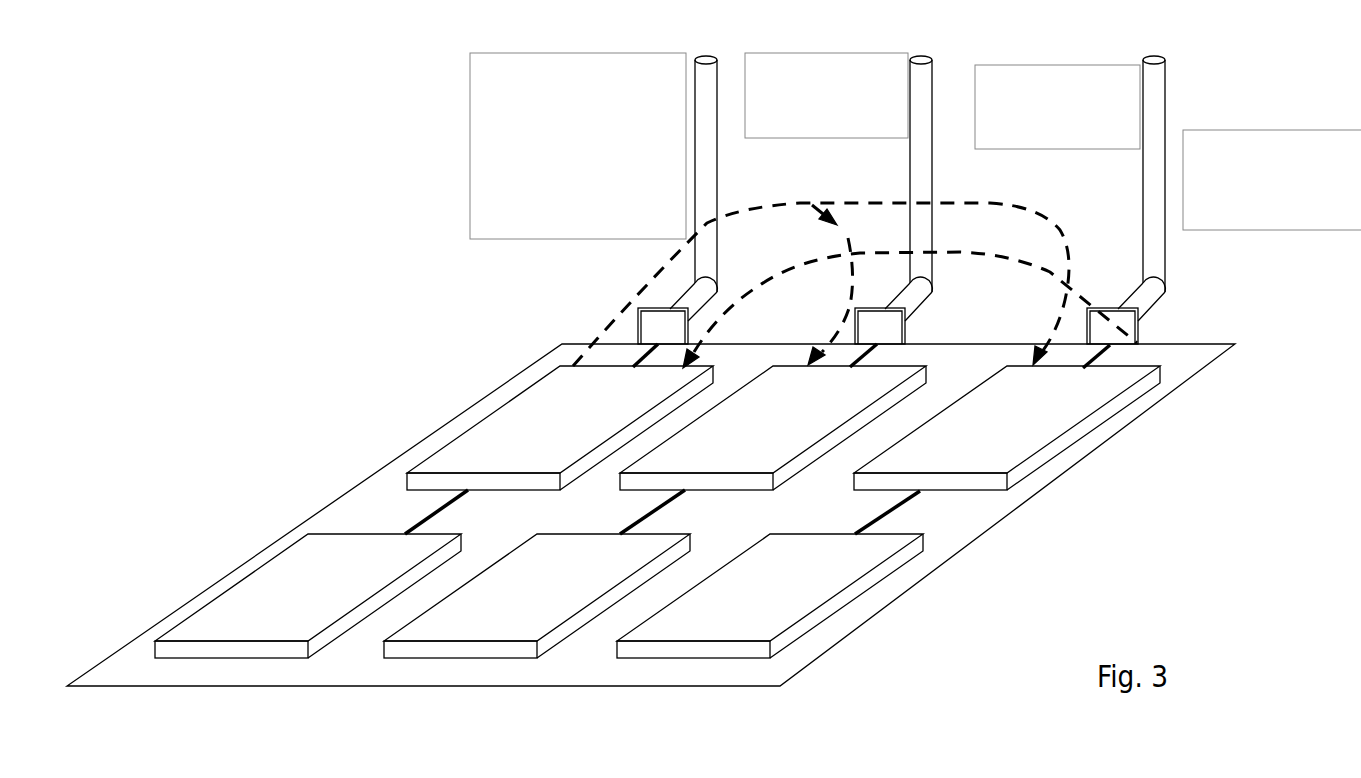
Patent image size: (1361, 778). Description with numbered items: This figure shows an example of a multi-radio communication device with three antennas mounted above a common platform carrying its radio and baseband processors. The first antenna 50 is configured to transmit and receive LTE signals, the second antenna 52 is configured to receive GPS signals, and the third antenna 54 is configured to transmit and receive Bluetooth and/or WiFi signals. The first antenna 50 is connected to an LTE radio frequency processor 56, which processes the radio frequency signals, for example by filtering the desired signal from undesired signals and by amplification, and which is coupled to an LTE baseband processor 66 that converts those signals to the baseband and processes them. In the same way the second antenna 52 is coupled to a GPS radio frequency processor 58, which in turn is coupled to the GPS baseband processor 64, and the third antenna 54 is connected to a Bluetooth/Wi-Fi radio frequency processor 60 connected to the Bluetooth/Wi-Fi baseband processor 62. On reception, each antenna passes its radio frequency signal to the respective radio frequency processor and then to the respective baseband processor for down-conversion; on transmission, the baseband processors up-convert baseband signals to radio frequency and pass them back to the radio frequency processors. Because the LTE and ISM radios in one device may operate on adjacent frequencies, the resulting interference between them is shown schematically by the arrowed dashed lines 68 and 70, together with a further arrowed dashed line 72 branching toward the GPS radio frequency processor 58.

The first antenna 50 is at (722, 76).
The second antenna 52 is at (935, 93).
The third antenna 54 is at (1168, 93).
The LTE radio frequency processor 56 is at (498, 472).
The GPS radio frequency processor 58 is at (710, 472).
The Bluetooth/Wi-Fi radio frequency processor 60 is at (934, 470).
The Bluetooth/Wi-Fi baseband processor 62 is at (867, 579).
The GPS baseband processor 64 is at (627, 579).
The LTE baseband processor 66 is at (393, 579).
The arrowed dashed line 68 is at (1020, 260).
The arrowed dashed line 70 is at (1068, 242).
The signal path 72 is at (848, 236).